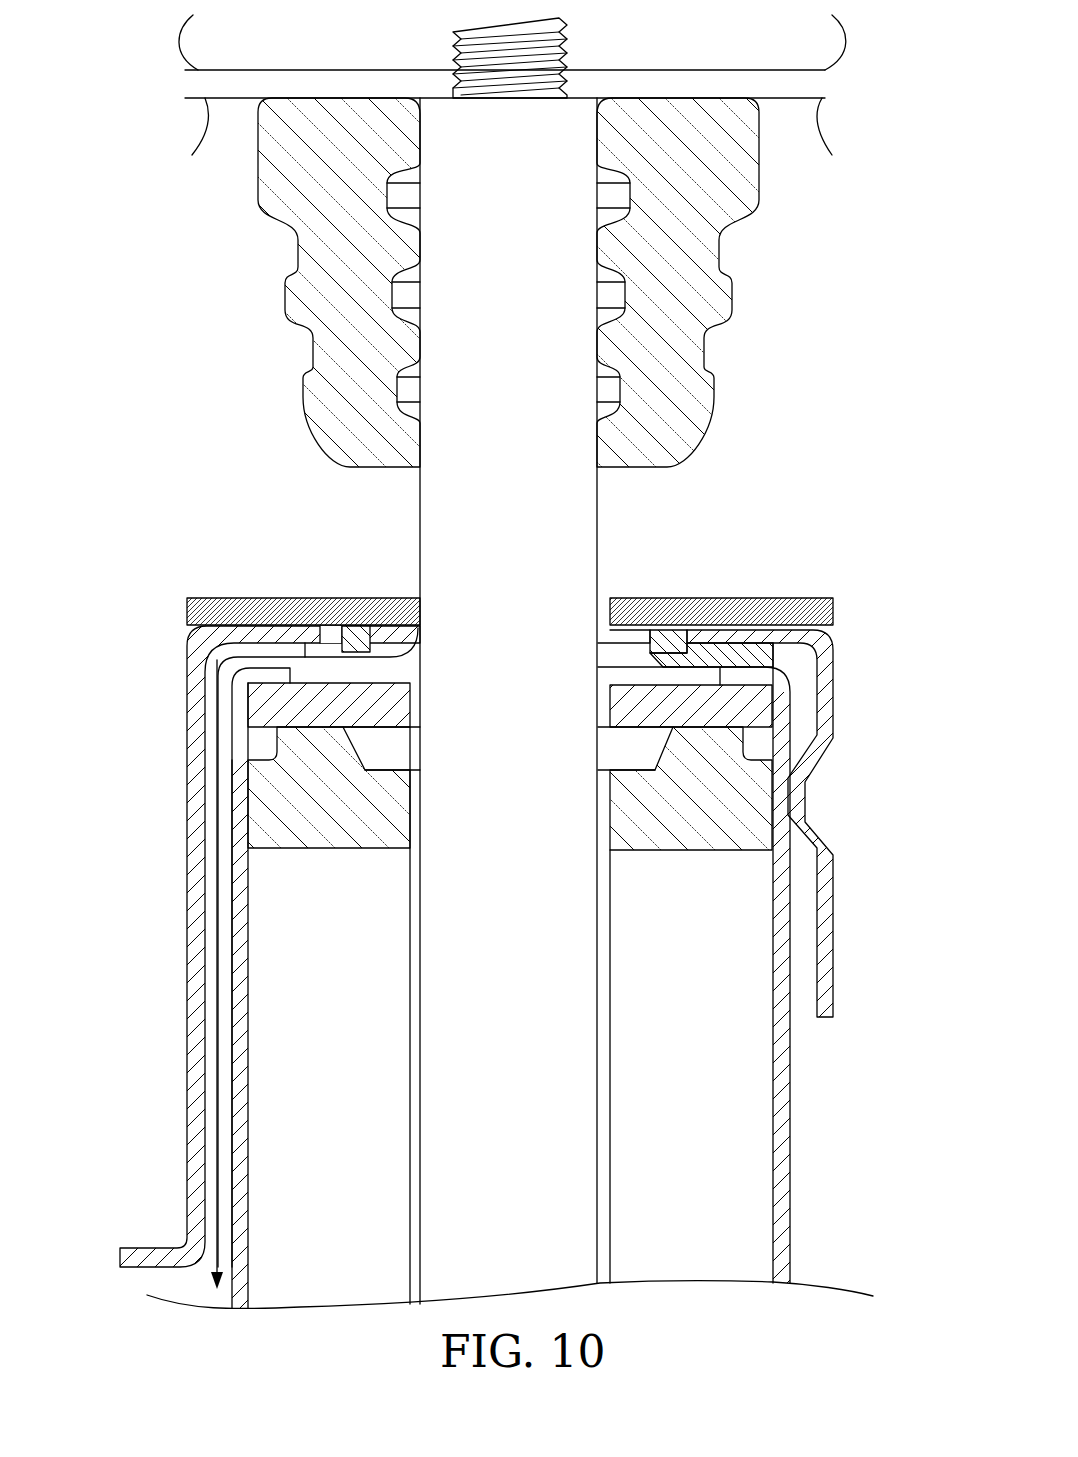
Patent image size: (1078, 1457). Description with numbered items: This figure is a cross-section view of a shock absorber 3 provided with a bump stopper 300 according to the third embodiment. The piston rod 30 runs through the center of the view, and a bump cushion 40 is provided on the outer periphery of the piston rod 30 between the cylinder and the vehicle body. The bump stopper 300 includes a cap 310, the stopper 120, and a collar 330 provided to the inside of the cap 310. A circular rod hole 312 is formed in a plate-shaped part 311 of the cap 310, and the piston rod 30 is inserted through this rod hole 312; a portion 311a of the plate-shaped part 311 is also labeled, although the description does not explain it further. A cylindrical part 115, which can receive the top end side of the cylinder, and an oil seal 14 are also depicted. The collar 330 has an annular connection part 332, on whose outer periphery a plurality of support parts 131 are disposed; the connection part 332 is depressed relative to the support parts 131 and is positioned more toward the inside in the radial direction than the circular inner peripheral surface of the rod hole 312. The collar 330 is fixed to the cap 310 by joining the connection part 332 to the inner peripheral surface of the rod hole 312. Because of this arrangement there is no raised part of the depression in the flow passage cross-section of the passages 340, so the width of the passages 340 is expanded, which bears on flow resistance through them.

The shock absorber 3 is at (846, 206).
The bump cushion 40 is at (673, 238).
The piston rod 30 is at (565, 1233).
The bump stopper 300 is at (146, 566).
The stopper 120 is at (284, 622).
The cap 310 is at (236, 885).
The plate-shaped part 311 is at (252, 630).
The lip of cover 311a is at (215, 653).
The rod hole 312 is at (343, 636).
The connection part 332 is at (357, 640).
The collar 330 is at (820, 648).
The support parts 131 is at (722, 650).
The oil seal 14 is at (759, 736).
The passages 340 is at (327, 662).
The cylindrical part 115 is at (197, 738).